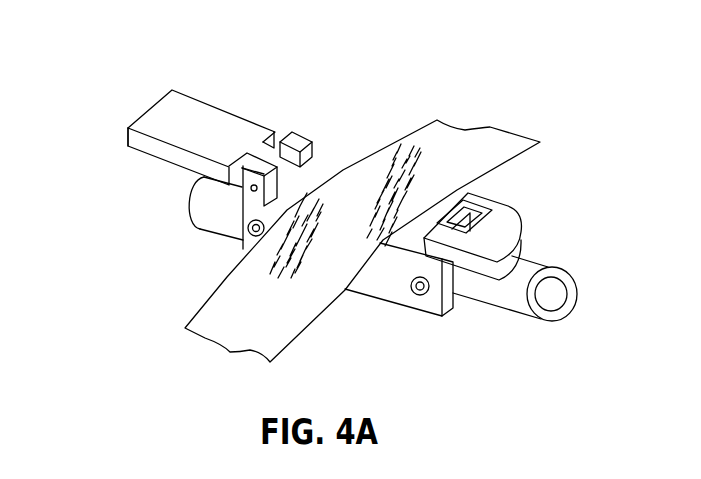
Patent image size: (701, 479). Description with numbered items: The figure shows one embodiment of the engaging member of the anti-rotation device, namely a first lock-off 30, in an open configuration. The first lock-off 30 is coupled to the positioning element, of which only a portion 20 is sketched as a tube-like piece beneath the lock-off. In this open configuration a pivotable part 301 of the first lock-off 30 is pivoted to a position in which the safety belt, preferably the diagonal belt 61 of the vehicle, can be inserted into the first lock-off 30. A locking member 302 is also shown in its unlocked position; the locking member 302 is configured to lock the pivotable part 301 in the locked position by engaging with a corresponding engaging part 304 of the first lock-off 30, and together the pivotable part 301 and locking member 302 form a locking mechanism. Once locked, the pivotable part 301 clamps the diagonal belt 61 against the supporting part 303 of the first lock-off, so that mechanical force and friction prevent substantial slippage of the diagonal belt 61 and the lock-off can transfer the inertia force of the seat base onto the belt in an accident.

The portion of the positioning element 20 is at (205, 208).
The first lock-off 30 is at (291, 104).
The diagonal belt 61 is at (493, 145).
The pivotable part 301 is at (193, 120).
The locking member 302 is at (503, 222).
The supporting part 303 is at (383, 291).
The engaging part 304 is at (128, 125).